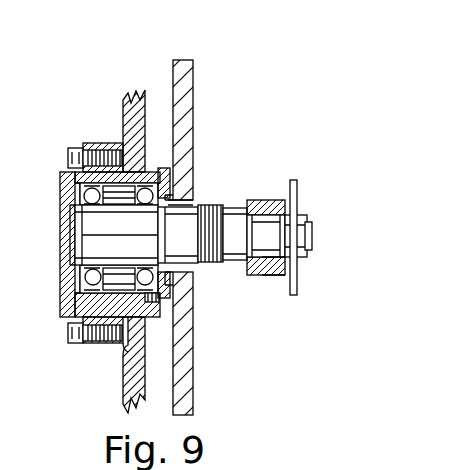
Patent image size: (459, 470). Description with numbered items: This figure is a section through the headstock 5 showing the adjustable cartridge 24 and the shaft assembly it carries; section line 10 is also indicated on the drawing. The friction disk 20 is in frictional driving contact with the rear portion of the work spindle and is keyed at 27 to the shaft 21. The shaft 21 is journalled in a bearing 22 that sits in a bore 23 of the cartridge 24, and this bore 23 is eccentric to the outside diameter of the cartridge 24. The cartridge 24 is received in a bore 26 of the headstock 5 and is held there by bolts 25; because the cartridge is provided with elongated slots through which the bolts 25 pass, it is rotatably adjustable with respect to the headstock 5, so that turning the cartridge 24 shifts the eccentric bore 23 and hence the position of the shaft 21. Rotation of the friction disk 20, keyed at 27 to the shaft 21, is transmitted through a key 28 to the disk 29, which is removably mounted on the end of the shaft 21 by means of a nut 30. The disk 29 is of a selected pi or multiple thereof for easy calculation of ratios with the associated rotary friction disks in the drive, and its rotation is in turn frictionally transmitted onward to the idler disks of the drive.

The headstock 5 is at (125, 398).
The section line 10 is at (54, 191).
The friction disk 20 is at (183, 62).
The shaft 21 is at (238, 215).
The bearing 22 is at (98, 296).
The bore 23 is at (121, 145).
The cartridge 24 is at (64, 258).
The bolts 25 is at (70, 331).
The bore 26 is at (125, 348).
The key 27 is at (186, 190).
The key 28 is at (266, 210).
The disk 29 is at (266, 276).
The nut 30 is at (299, 258).